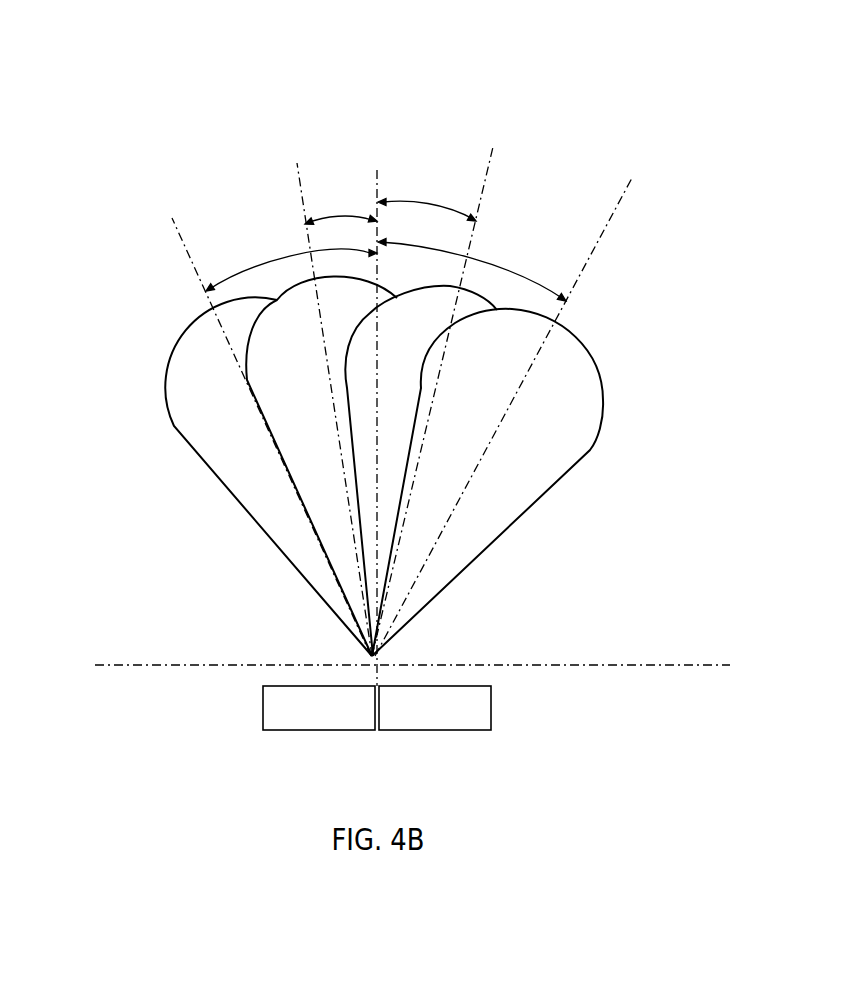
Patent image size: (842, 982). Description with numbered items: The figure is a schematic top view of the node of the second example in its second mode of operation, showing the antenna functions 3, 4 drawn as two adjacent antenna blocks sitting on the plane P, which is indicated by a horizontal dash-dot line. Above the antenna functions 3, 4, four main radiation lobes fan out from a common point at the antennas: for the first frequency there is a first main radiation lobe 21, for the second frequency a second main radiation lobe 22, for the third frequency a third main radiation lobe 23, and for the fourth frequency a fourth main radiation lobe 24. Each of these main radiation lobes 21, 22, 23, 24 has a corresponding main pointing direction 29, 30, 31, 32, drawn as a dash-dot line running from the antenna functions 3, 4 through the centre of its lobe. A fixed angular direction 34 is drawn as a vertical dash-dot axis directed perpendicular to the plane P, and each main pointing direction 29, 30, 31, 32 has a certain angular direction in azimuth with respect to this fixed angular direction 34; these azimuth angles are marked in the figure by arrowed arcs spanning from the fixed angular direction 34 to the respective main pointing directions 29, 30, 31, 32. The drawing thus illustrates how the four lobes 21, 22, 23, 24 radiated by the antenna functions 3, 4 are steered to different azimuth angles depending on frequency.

The first antenna function 3 is at (271, 731).
The second antenna function 4 is at (396, 731).
The first main radiation lobe 21 is at (243, 478).
The second main radiation lobe 22 is at (293, 414).
The third main radiation lobe 23 is at (405, 378).
The fourth main radiation lobe 24 is at (520, 470).
The main pointing direction 29 is at (203, 283).
The main pointing direction 30 is at (297, 163).
The main pointing direction 31 is at (482, 186).
The main pointing direction 32 is at (597, 270).
The fixed angular direction 34 is at (377, 170).
The plane P is at (603, 664).